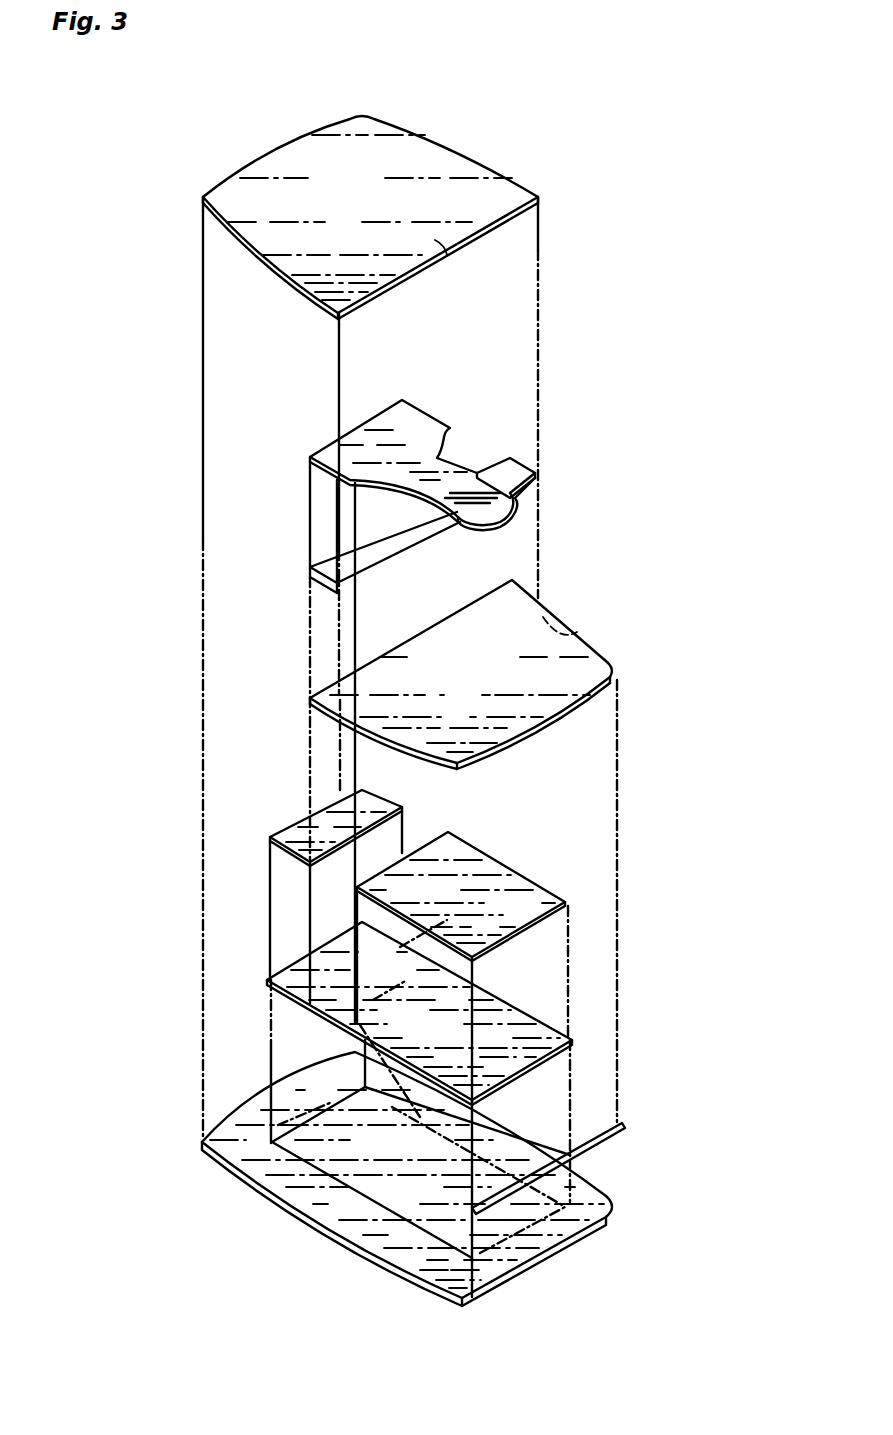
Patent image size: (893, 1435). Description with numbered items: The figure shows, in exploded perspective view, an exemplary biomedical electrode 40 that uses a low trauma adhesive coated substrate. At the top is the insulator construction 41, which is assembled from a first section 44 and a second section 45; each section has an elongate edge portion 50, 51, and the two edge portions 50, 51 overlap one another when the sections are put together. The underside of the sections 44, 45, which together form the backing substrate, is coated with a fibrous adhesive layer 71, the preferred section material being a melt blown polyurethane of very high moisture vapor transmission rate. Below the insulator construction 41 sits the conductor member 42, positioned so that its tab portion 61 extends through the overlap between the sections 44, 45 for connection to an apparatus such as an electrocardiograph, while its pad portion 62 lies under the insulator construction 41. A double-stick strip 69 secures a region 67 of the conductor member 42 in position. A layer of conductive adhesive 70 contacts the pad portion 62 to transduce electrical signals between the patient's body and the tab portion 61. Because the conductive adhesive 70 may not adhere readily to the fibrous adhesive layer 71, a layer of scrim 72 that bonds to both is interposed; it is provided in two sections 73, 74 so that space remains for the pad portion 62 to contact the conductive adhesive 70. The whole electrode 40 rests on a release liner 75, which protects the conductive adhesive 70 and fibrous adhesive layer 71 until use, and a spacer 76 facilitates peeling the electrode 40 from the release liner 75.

The biomedical electrode 40 is at (594, 294).
The insulator construction 41 is at (252, 225).
The conductor member 42 is at (413, 422).
The first section 44 is at (443, 162).
The second section 45 is at (587, 668).
The elongate edge portion 50 is at (443, 247).
The elongate edge portion 51 is at (455, 606).
The tab portion 61 is at (467, 490).
The pad portion 62 is at (381, 430).
The region of the conductor member 67 is at (438, 461).
The double-stick strip 69 is at (513, 468).
The layer of conductive adhesive 70 is at (521, 1058).
The fibrous adhesive layer 71 is at (318, 240).
The layer of scrim 72 is at (372, 798).
The scrim section 73 is at (508, 900).
The scrim section 74 is at (338, 822).
The release liner 75 is at (365, 1263).
The spacer 76 is at (593, 1152).